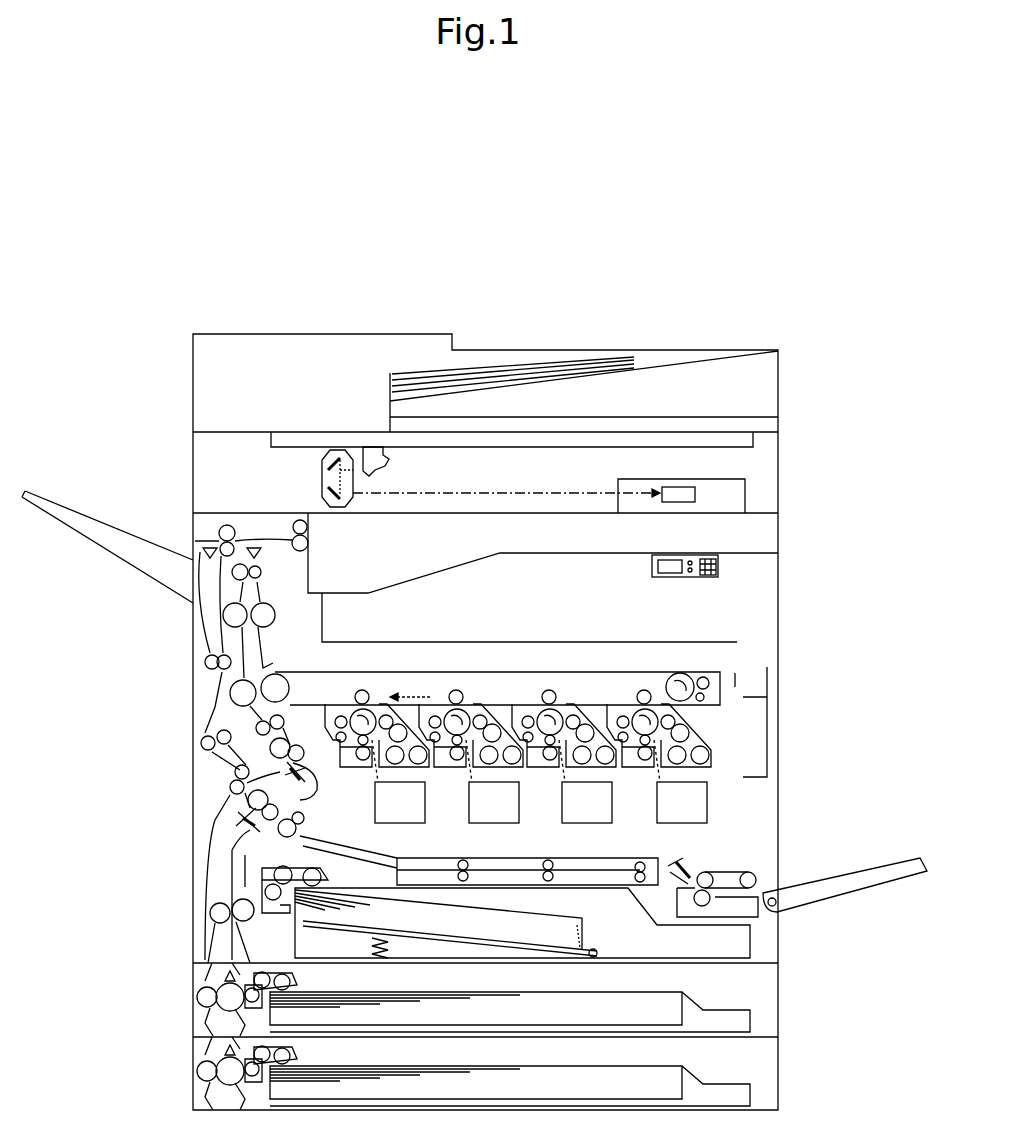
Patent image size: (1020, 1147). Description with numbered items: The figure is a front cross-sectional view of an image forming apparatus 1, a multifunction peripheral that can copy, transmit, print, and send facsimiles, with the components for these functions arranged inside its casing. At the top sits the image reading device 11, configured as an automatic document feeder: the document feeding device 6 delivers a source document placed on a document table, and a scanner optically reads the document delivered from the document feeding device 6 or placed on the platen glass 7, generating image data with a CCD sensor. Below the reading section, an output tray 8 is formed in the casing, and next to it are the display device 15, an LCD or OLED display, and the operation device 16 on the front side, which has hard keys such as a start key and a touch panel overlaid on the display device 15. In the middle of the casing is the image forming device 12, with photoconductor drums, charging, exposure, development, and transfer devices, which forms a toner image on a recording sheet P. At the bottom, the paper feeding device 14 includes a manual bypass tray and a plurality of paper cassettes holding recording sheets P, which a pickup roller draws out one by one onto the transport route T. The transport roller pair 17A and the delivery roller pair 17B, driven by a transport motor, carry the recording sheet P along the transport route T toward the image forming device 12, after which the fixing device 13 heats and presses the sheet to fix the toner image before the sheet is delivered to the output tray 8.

The image forming apparatus 1 is at (491, 318).
The document feeding device 6 is at (569, 348).
The platen glass 7 is at (634, 441).
The output tray 8 is at (437, 568).
The image reading device 11 is at (188, 469).
The image forming device 12 is at (742, 735).
The fixing device 13 is at (226, 610).
The paper feeding device 14 is at (750, 991).
The display device 15 is at (672, 565).
The operation device 16 is at (719, 570).
The transport roller pair 17A is at (313, 786).
The delivery roller pair 17B is at (309, 545).
The transport route T is at (247, 838).
The recording sheet P is at (570, 910).